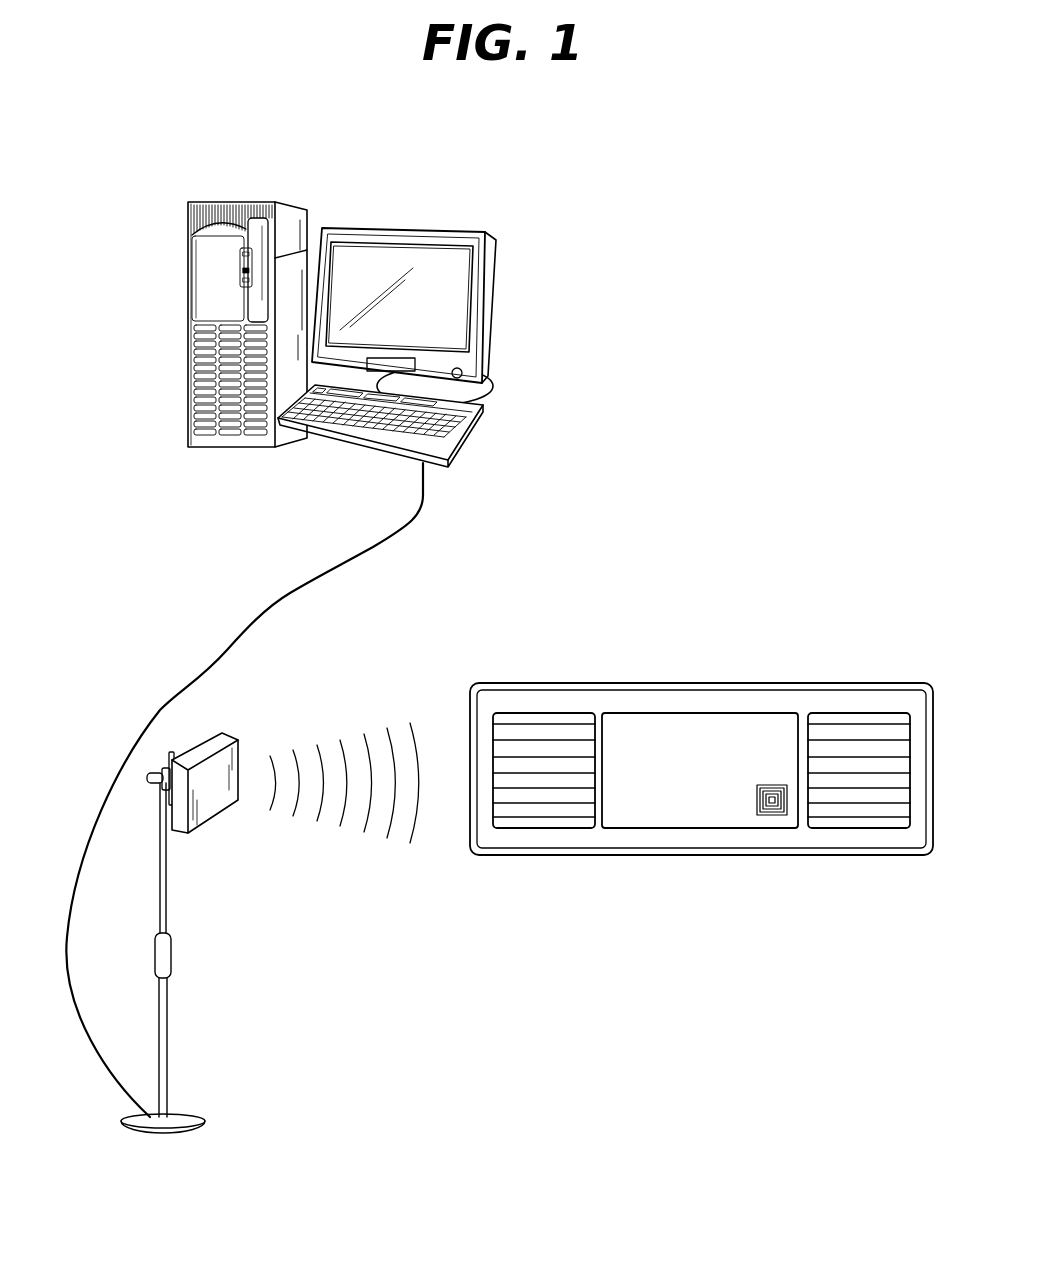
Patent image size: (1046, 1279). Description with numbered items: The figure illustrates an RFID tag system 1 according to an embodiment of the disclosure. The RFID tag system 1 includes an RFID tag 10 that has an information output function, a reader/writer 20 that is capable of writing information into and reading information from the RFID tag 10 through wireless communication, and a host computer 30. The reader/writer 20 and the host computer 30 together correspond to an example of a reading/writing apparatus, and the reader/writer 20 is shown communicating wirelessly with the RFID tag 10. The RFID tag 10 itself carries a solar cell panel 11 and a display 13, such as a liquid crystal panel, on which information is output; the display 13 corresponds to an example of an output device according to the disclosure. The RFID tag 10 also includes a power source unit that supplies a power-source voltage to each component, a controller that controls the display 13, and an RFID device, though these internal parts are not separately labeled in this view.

The RFID tag system 1 is at (677, 161).
The RFID tag 10 is at (673, 684).
The solar cell panel 11 is at (515, 714).
The display 13 is at (728, 714).
The reader/writer 20 is at (230, 737).
The host computer 30 is at (370, 218).